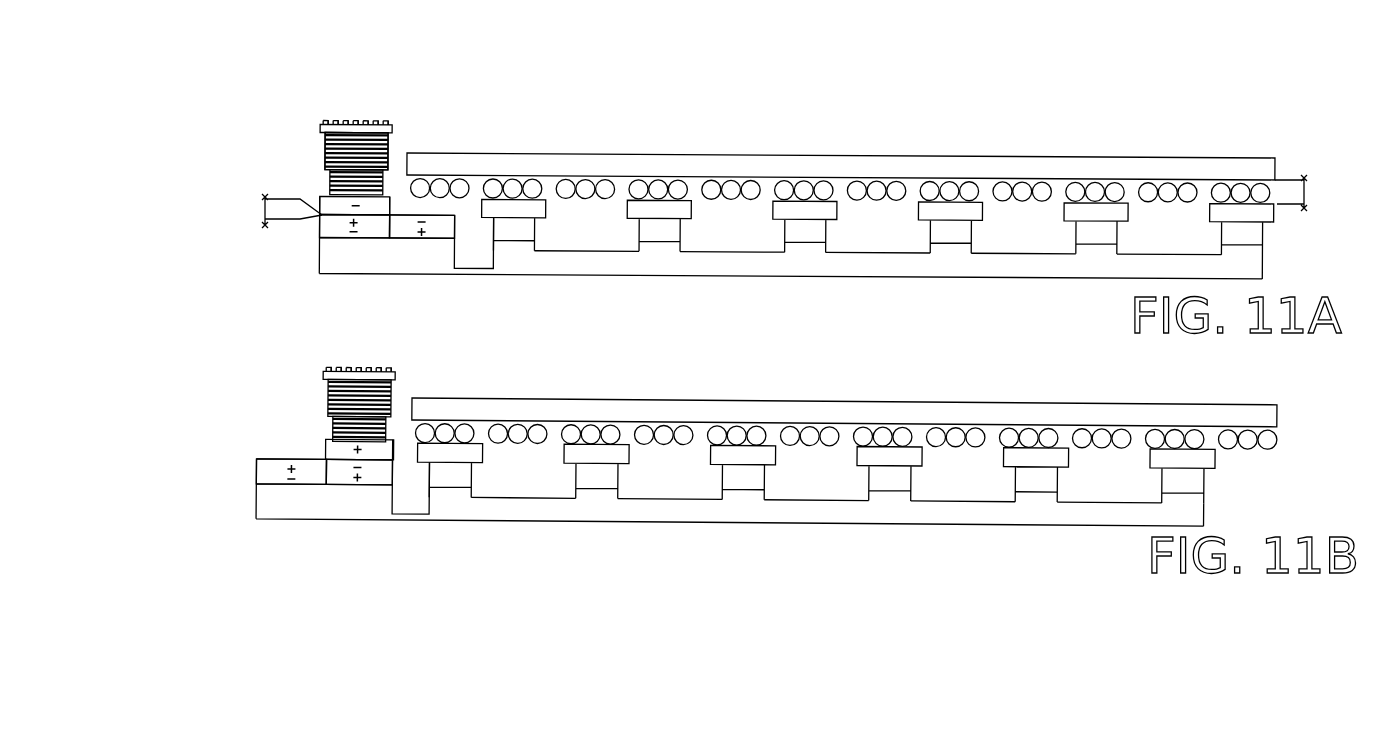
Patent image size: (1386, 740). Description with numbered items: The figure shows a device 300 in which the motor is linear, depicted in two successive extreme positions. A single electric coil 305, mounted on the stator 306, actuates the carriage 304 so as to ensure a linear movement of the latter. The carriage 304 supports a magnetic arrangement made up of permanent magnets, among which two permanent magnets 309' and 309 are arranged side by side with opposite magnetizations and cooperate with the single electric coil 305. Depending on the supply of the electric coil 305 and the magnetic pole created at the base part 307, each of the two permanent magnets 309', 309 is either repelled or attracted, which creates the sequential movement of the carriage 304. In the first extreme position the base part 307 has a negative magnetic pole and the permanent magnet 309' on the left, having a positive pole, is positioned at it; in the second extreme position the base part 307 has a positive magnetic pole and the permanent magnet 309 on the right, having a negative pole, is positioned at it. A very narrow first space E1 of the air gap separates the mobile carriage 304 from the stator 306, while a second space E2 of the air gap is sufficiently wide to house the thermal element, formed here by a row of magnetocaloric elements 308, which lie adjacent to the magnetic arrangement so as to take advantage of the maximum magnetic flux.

In FIG. 11A, the device 300 is at (243, 76).
In FIG. 11B, the device 300 is at (203, 383).
In FIG. 11A, the carriage 304 is at (310, 265).
In FIG. 11B, the carriage 304 is at (248, 502).
In FIG. 11A, the electric coil 305 is at (325, 156).
In FIG. 11B, the electric coil 305 is at (327, 405).
In FIG. 11A, the stator 306 is at (313, 146).
In FIG. 11A, the base part 307 is at (382, 203).
In FIG. 11B, the base part 307 is at (383, 447).
In FIG. 11A, the magnetocaloric elements 308 is at (568, 181).
In FIG. 11B, the magnetocaloric elements 308 is at (643, 428).
In FIG. 11A, the permanent magnet 309 is at (448, 266).
In FIG. 11B, the permanent magnet 309 is at (388, 510).
In FIG. 11A, the permanent magnet 309' is at (374, 265).
In FIG. 11B, the permanent magnet 309' is at (306, 510).
In FIG. 11A, the first space E1 is at (279, 211).
In FIG. 11A, the second space E2 is at (1306, 193).